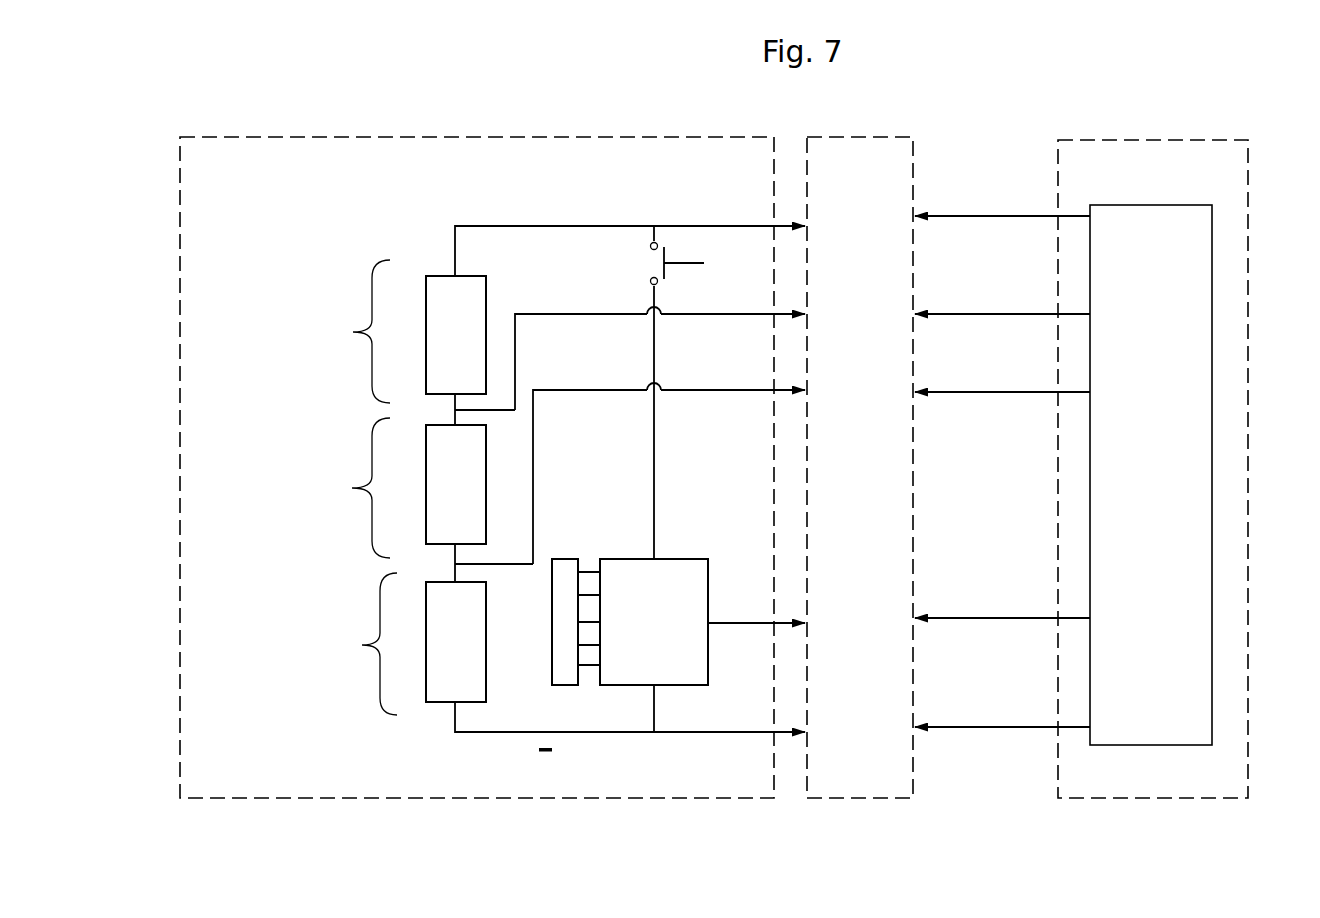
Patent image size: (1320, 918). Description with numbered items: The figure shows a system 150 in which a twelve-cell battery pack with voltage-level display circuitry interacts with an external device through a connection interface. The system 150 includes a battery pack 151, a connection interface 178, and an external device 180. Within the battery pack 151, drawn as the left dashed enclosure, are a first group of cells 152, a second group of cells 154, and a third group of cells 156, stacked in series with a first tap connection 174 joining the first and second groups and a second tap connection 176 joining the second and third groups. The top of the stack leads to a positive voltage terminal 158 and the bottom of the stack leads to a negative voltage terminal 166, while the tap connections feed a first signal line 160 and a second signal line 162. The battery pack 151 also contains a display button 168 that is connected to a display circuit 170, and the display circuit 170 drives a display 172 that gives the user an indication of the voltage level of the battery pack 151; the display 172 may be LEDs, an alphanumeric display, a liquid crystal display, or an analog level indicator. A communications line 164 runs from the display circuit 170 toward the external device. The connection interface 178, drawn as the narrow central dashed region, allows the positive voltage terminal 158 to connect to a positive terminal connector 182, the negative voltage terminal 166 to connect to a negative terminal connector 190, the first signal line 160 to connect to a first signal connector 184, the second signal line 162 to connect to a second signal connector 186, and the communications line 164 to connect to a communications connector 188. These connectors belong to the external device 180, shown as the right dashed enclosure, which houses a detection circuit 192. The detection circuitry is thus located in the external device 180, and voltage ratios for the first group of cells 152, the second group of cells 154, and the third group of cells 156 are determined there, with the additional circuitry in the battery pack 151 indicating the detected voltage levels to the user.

The system 150 is at (584, 65).
The battery pack 151 is at (305, 135).
The first group of cells 152 is at (348, 332).
The second group of cells 154 is at (348, 488).
The third group of cells 156 is at (356, 645).
The positive voltage terminal 158 is at (593, 222).
The first signal line 160 is at (588, 311).
The second signal line 162 is at (587, 387).
The communications line 164 is at (786, 614).
The negative voltage terminal 166 is at (693, 729).
The display button 168 is at (680, 250).
The display circuit 170 is at (672, 555).
The display 172 is at (548, 660).
The first tap connection 174 is at (446, 411).
The second tap connection 176 is at (446, 564).
The connection interface 178 is at (888, 134).
The external device 180 is at (1158, 132).
The positive terminal connector 182 is at (1052, 229).
The first signal connector 184 is at (1043, 321).
The second signal connector 186 is at (1040, 403).
The communications connector 188 is at (1038, 631).
The negative terminal connector 190 is at (1035, 746).
The detection circuit 192 is at (1168, 761).